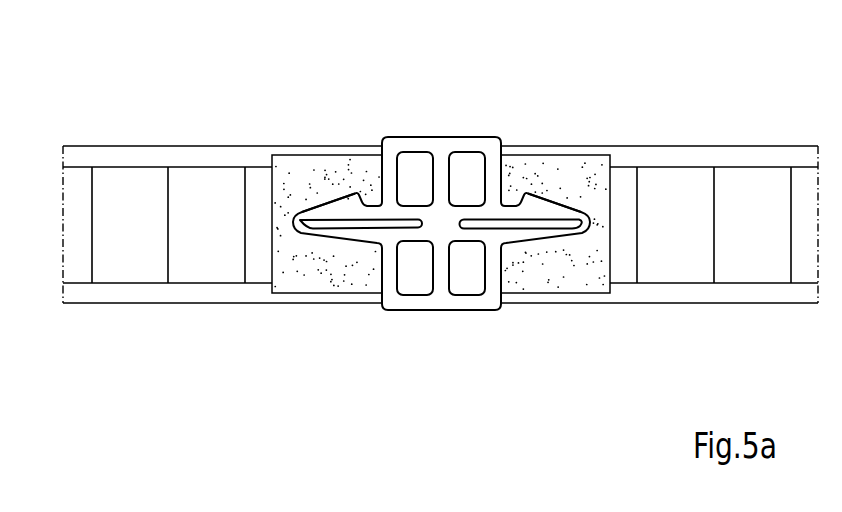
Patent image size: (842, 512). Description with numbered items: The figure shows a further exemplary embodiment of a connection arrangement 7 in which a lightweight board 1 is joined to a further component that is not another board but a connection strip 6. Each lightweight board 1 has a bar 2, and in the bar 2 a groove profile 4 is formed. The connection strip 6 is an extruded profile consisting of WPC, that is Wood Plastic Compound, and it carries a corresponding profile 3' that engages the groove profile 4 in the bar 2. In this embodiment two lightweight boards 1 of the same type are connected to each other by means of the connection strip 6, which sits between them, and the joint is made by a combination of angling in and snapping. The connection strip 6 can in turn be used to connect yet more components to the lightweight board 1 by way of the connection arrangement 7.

The lightweight board 1 is at (165, 125).
The bar 2 is at (292, 170).
The profile 3' is at (441, 147).
The groove profile 4 is at (297, 236).
The connection strip 6 is at (440, 116).
The connection arrangement 7 is at (362, 332).